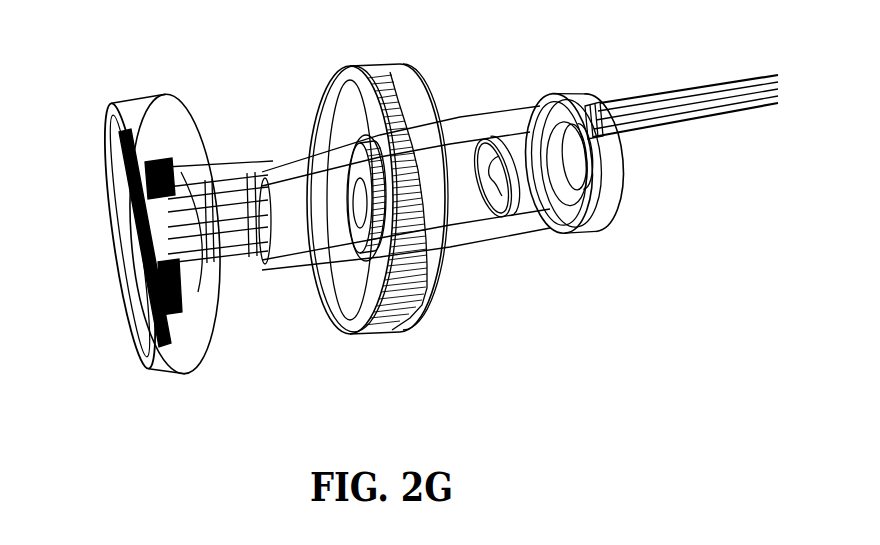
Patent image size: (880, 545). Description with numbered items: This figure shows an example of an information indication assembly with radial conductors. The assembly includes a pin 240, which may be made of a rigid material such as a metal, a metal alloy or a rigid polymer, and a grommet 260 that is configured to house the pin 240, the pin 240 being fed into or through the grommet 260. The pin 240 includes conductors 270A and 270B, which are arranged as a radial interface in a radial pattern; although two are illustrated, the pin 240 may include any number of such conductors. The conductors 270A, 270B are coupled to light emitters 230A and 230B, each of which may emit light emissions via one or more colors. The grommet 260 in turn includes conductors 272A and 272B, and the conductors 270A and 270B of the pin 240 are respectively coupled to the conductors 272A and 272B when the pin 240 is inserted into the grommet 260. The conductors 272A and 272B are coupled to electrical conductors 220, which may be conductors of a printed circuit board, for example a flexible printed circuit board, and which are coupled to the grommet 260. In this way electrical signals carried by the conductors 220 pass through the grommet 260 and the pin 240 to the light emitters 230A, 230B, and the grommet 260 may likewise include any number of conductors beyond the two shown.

The electrical conductors 220 is at (694, 88).
The light emitter 230A is at (145, 198).
The light emitter 230B is at (152, 282).
The pin 240 is at (140, 97).
The grommet 260 is at (397, 77).
The conductor 270A is at (212, 183).
The conductor 270B is at (251, 183).
The conductor 272A is at (345, 160).
The conductor 272B is at (381, 238).